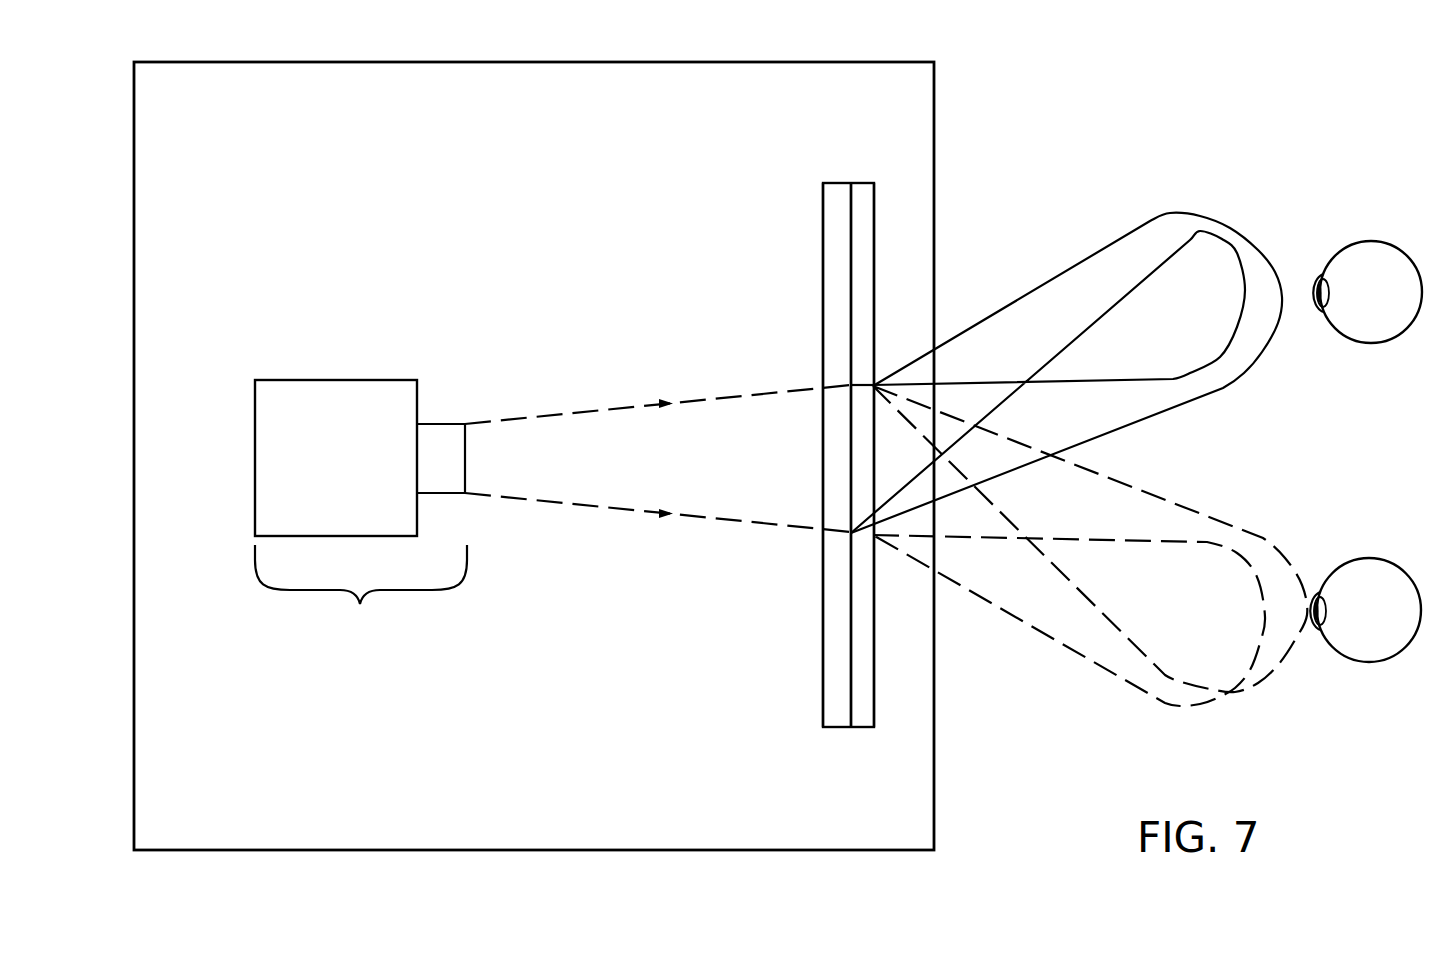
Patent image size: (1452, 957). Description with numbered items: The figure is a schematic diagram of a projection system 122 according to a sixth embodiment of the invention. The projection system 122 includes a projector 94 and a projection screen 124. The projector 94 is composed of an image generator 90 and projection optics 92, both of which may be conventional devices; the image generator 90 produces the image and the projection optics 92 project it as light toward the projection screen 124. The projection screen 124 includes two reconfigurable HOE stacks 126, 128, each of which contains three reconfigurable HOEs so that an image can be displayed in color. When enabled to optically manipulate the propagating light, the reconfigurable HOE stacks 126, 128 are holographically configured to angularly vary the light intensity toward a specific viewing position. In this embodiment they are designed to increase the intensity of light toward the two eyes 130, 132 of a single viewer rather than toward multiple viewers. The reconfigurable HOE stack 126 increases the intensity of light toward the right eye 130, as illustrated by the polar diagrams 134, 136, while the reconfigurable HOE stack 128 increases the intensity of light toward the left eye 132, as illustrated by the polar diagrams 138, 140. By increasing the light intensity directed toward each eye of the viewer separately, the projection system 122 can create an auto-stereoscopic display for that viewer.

The image generator 90 is at (348, 386).
The projection optics 92 is at (465, 408).
The projector 94 is at (361, 589).
The projection system 122 is at (585, 72).
The projection screen 124 is at (875, 230).
The reconfigurable HOE stack 126 is at (845, 193).
The reconfigurable HOE stack 128 is at (860, 193).
The right eye 130 is at (1390, 243).
The left eye 132 is at (1390, 564).
The polar diagram 134 is at (1158, 213).
The polar diagram 136 is at (1226, 389).
The polar diagram 138 is at (1238, 524).
The polar diagram 140 is at (1120, 684).